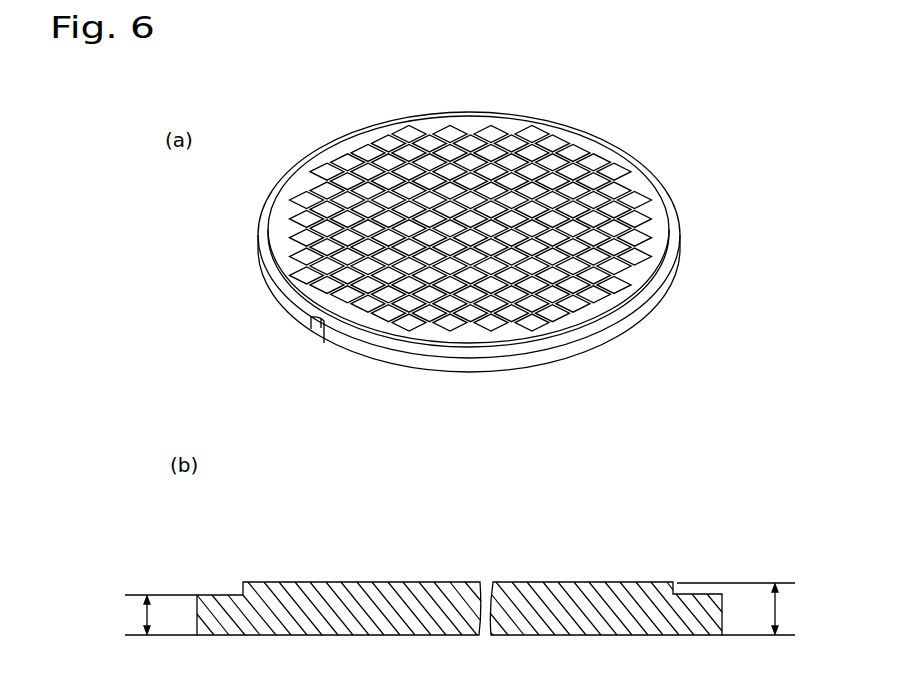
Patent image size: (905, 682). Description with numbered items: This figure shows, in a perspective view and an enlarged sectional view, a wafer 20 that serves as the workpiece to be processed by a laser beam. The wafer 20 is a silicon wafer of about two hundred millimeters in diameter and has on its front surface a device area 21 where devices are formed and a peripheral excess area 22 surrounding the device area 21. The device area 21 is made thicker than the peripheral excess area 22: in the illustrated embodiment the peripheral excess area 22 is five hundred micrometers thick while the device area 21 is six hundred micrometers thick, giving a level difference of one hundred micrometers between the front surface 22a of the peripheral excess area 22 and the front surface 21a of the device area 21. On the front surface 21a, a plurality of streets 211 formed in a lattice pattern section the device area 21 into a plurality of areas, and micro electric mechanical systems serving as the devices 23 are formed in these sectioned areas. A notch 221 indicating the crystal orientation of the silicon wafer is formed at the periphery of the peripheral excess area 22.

The wafer 20 is at (462, 339).
The device area 21 is at (510, 316).
The front surface of the device area 21a is at (665, 216).
The streets 211 is at (482, 137).
The peripheral excess area 22 is at (459, 373).
The front surface of the peripheral excess area 22a is at (520, 354).
The notch 221 is at (308, 330).
The devices 23 is at (637, 197).